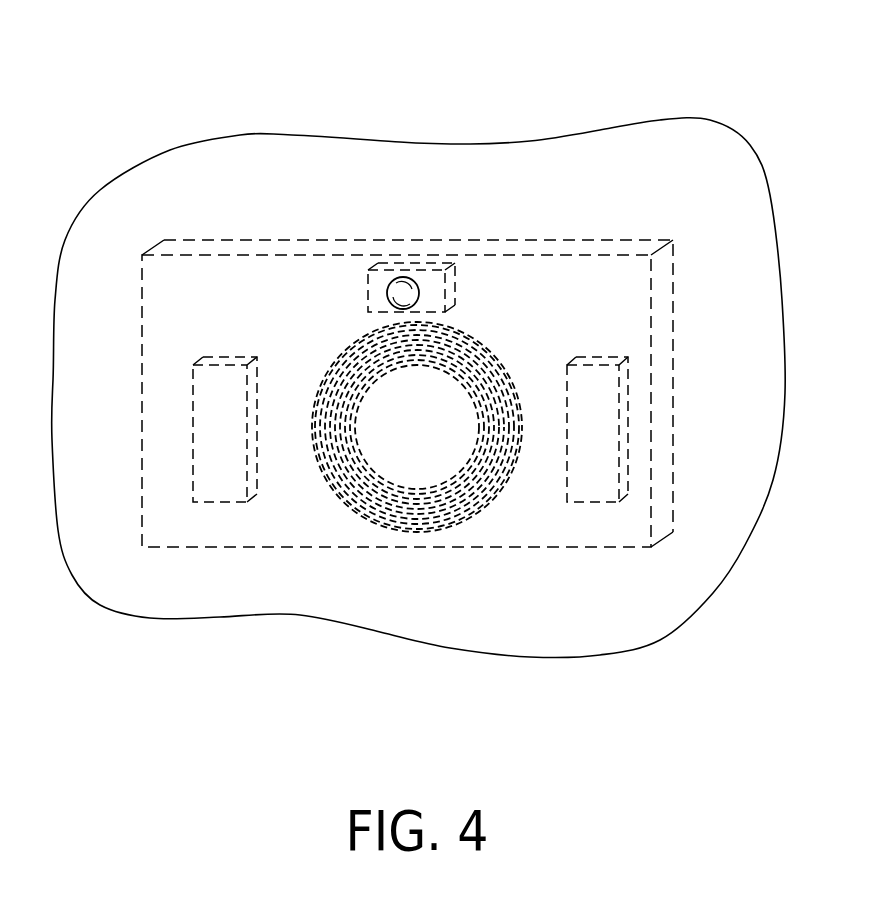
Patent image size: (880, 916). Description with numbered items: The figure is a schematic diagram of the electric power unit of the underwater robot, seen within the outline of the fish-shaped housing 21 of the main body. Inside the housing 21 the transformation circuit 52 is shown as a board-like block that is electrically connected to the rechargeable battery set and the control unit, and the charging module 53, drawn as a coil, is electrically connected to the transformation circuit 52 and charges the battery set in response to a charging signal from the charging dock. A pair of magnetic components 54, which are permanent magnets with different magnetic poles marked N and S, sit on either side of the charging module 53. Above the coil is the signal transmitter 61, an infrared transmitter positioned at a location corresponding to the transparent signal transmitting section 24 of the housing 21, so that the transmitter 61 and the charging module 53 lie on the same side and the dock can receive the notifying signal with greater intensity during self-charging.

The housing 21 is at (292, 135).
The transparent signal transmitting section 24 is at (387, 293).
The transformation circuit 52 is at (598, 285).
The charging module 53 is at (497, 357).
The magnetic components 54 is at (233, 485).
The signal transmitter 61 is at (400, 276).